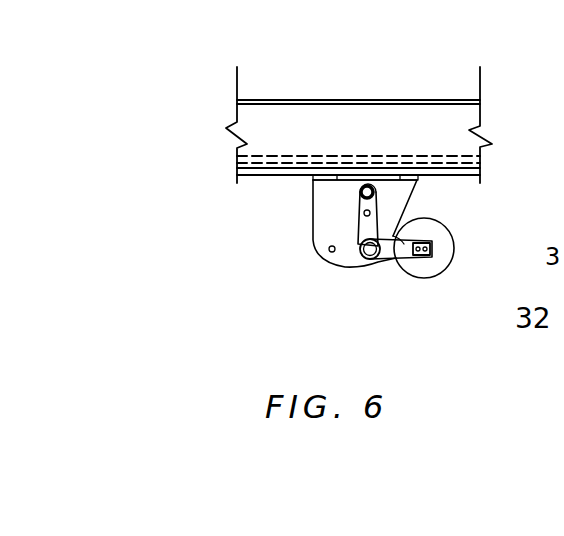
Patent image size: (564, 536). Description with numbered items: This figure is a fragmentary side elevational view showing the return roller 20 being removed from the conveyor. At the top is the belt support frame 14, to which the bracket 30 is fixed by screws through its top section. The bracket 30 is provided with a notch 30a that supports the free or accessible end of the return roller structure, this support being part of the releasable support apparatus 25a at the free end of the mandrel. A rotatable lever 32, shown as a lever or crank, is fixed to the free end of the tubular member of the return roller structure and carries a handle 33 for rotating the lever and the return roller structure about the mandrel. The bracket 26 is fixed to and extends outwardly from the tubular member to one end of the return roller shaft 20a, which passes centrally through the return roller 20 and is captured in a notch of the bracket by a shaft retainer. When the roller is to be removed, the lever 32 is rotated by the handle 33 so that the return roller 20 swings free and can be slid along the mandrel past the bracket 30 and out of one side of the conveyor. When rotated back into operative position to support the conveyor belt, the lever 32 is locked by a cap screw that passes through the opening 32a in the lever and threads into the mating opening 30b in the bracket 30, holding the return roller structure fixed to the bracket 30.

The belt support frame 14 is at (230, 122).
The return roller 20 is at (447, 275).
The return roller shaft 20a is at (432, 249).
The releasable support apparatus 25a is at (442, 297).
The bracket 26 is at (397, 250).
The bracket 30 is at (400, 195).
The notch 30a is at (405, 203).
The opening 30b is at (332, 252).
The lever 32 is at (362, 227).
The opening 32a is at (360, 217).
The handle 33 is at (360, 196).